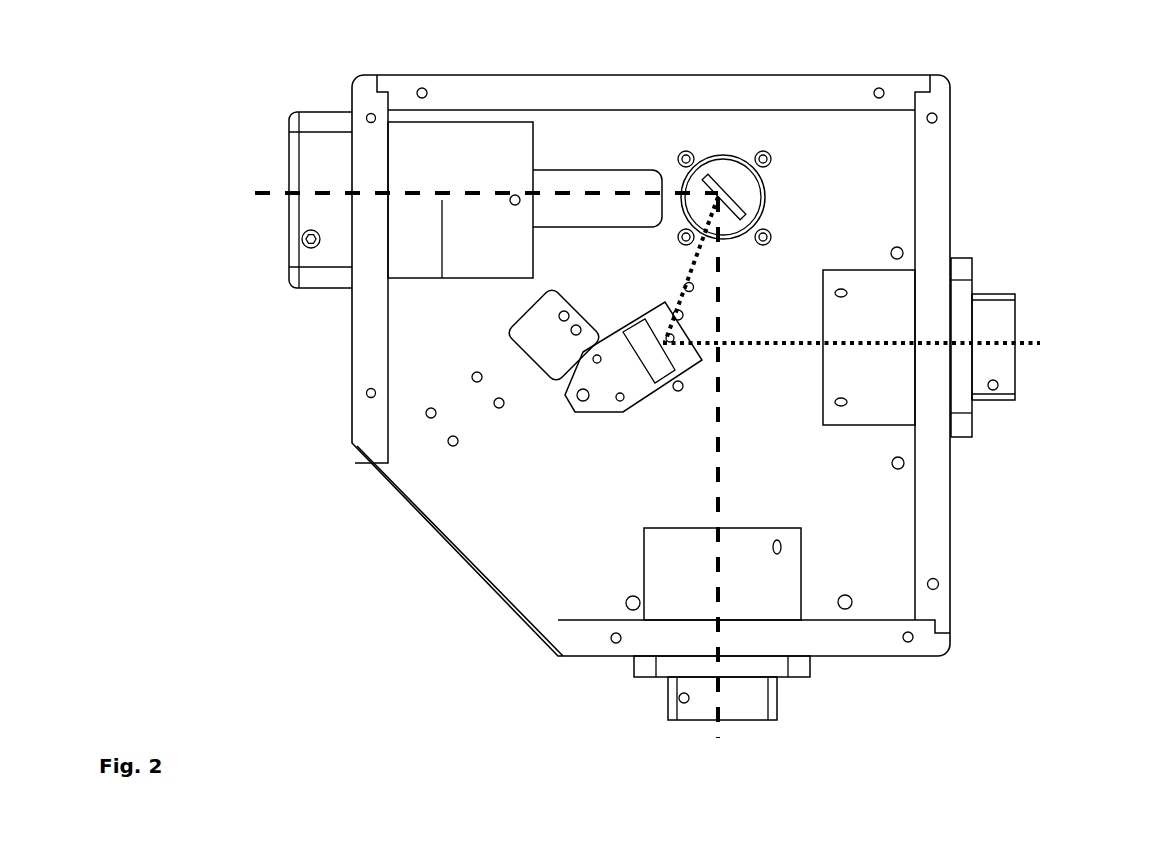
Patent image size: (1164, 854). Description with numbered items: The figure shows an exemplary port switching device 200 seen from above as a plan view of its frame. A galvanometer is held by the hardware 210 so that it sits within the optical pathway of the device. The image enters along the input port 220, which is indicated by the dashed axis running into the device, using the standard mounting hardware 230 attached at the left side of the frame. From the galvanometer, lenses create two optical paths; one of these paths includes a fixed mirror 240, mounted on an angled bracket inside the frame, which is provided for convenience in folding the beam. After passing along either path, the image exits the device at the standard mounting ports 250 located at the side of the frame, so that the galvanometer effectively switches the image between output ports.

The port switching device 200 is at (754, 391).
The hardware 210 is at (773, 178).
The input port 220 is at (452, 195).
The standard mounting hardware 230 is at (469, 177).
The fixed mirror 240 is at (633, 360).
The standard mounting ports 250 is at (932, 355).